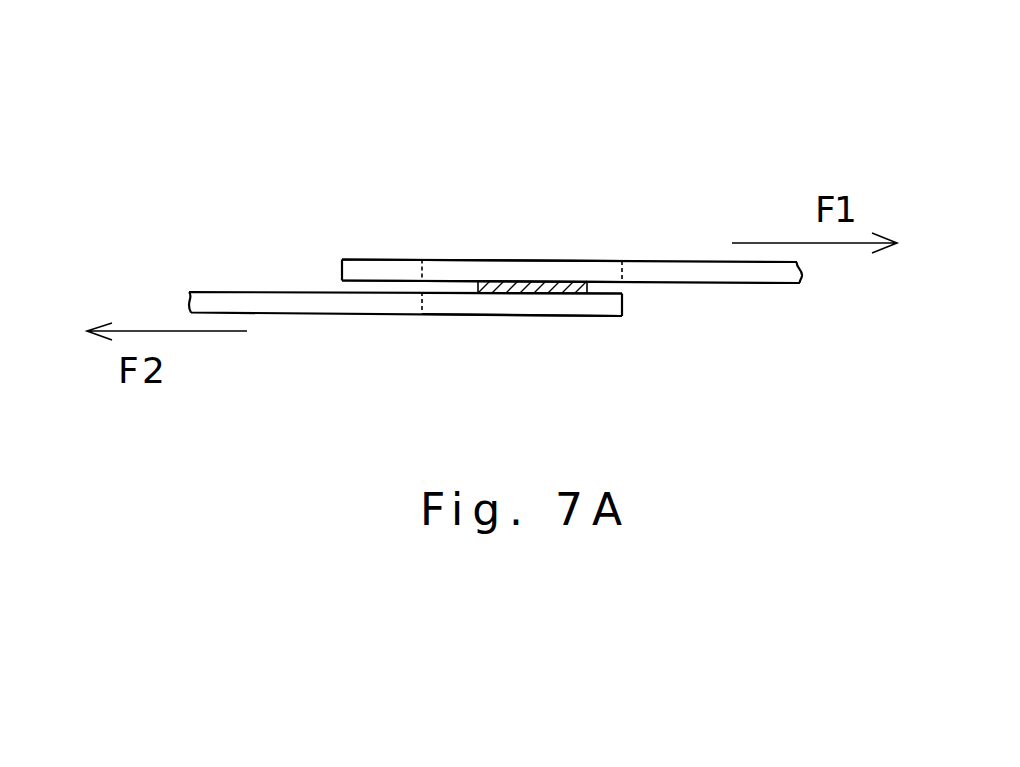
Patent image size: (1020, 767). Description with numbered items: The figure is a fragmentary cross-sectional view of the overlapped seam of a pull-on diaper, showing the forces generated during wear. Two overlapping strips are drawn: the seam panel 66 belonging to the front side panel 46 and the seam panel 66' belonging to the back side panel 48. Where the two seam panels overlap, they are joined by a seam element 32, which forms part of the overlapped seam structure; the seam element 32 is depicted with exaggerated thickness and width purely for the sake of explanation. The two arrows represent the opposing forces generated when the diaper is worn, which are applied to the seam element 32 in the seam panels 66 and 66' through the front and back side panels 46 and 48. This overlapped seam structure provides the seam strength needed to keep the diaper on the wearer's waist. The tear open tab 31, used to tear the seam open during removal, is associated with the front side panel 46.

The tear open tab 31 is at (391, 269).
The seam element 32 is at (605, 133).
The front side panel 46 is at (223, 300).
The back side panel 48 is at (675, 268).
The seam panel 66 is at (522, 365).
The seam panel 66' is at (522, 207).